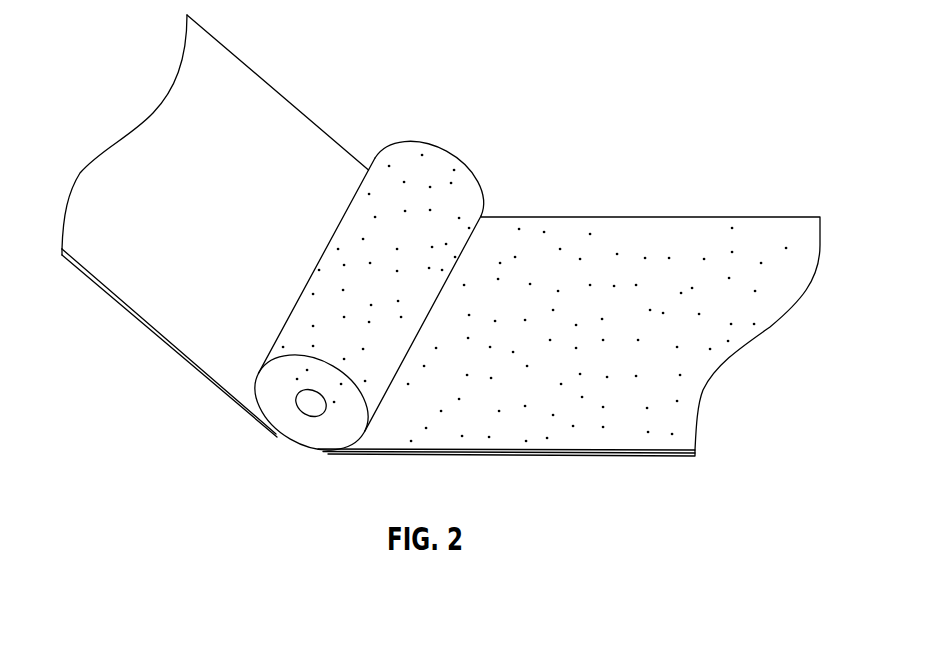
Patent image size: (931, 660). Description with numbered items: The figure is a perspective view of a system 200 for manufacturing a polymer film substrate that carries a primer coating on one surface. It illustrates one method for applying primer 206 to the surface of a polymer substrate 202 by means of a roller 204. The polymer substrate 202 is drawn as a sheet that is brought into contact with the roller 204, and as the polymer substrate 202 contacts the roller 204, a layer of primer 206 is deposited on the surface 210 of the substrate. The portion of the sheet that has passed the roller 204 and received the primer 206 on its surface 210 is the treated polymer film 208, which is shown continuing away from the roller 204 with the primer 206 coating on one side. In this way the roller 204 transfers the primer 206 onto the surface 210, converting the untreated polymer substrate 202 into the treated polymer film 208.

The wipe roll assembly 200 is at (647, 58).
The polymer substrate 202 is at (168, 318).
The roller 204 is at (296, 432).
The primer 206 is at (445, 152).
The treated polymer film 208 is at (605, 455).
The surface 210 is at (695, 386).